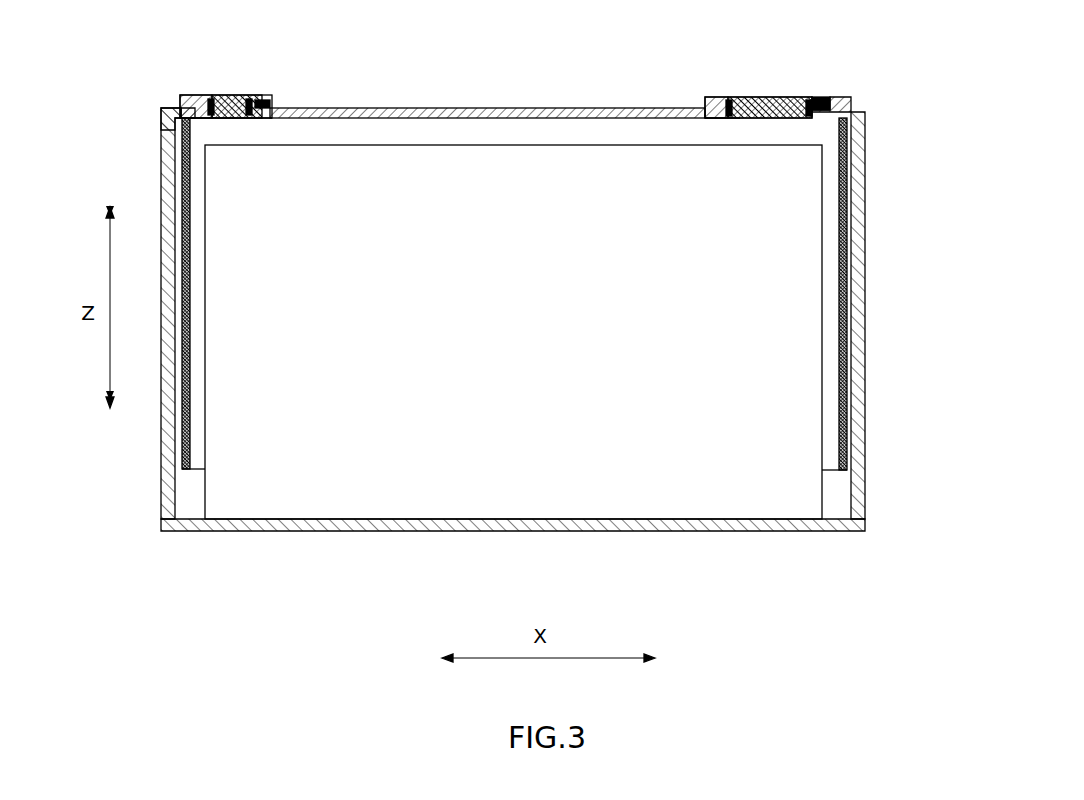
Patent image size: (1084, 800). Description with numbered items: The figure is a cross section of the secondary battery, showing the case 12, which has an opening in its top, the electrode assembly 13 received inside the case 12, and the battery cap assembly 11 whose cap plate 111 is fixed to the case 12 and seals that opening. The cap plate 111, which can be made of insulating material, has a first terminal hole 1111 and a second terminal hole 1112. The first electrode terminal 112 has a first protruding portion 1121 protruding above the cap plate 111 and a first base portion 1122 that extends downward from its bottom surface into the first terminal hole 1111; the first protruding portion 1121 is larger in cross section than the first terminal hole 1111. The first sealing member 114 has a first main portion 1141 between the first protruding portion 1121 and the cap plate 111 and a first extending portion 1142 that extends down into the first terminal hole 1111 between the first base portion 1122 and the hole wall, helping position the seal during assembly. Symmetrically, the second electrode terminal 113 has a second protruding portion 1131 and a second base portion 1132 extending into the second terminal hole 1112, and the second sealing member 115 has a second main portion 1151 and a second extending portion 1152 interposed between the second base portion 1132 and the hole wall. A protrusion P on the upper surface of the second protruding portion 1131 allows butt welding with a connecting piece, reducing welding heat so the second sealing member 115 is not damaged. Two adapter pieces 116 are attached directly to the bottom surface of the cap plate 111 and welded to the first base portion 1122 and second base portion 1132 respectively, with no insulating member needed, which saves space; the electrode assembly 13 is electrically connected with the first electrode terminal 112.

The battery cap assembly 11 is at (488, 72).
The cap plate 111 is at (638, 107).
The first terminal hole 1111 is at (712, 114).
The second terminal hole 1112 is at (205, 118).
The first electrode terminal 112 is at (745, 70).
The first protruding portion 1121 is at (716, 99).
The first base portion 1122 is at (769, 88).
The second electrode terminal 113 is at (218, 70).
The second protruding portion 1131 is at (210, 100).
The second base portion 1132 is at (241, 88).
The first sealing member 114 is at (884, 84).
The first main portion 1141 is at (826, 99).
The first extending portion 1142 is at (859, 99).
The second sealing member 115 is at (119, 116).
The second main portion 1151 is at (200, 101).
The second extending portion 1152 is at (98, 95).
The adapter piece 116 is at (190, 160).
The case 12 is at (862, 333).
The electrode assembly 13 is at (541, 500).
The protrusion P is at (262, 96).